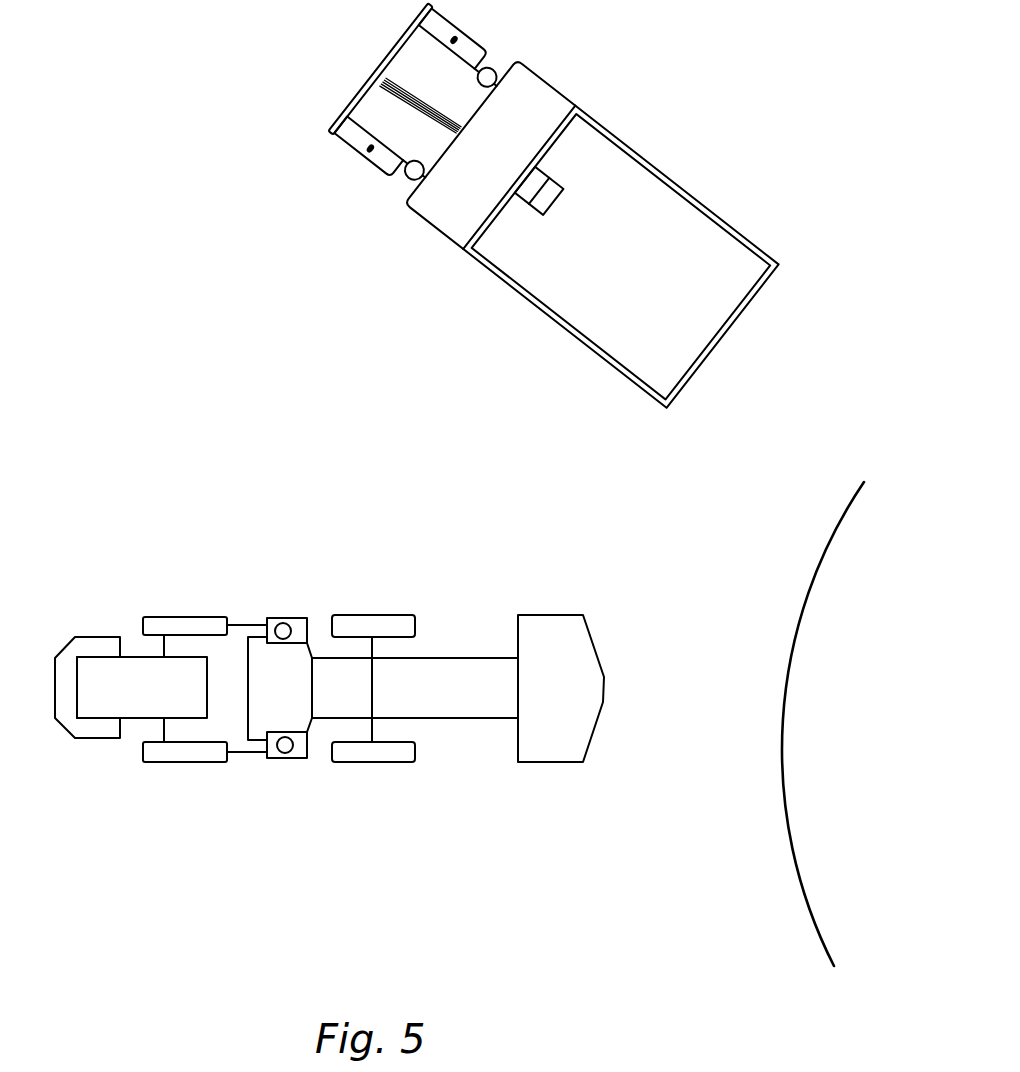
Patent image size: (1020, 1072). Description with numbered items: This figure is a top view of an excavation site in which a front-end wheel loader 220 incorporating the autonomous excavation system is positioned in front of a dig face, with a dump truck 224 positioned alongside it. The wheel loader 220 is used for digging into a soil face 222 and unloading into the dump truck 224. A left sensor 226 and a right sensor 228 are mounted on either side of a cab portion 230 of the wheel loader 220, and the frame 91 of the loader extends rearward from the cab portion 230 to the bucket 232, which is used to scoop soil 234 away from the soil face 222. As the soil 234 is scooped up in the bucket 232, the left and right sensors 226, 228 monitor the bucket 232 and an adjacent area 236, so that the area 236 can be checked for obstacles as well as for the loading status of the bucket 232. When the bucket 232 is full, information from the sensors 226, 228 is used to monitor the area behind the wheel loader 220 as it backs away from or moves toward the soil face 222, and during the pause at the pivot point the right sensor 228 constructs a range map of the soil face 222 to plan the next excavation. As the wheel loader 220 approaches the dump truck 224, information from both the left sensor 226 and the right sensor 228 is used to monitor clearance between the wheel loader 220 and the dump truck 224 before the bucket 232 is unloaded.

The frame rail 91 is at (455, 668).
The wheel loader 220 is at (163, 610).
The soil face 222 is at (817, 920).
The dump truck 224 is at (662, 170).
The left sensor 226 is at (277, 623).
The right sensor 228 is at (287, 762).
The cab portion 230 is at (272, 702).
The bucket 232 is at (562, 732).
The soil 234 is at (870, 755).
The adjacent area 236 is at (357, 421).